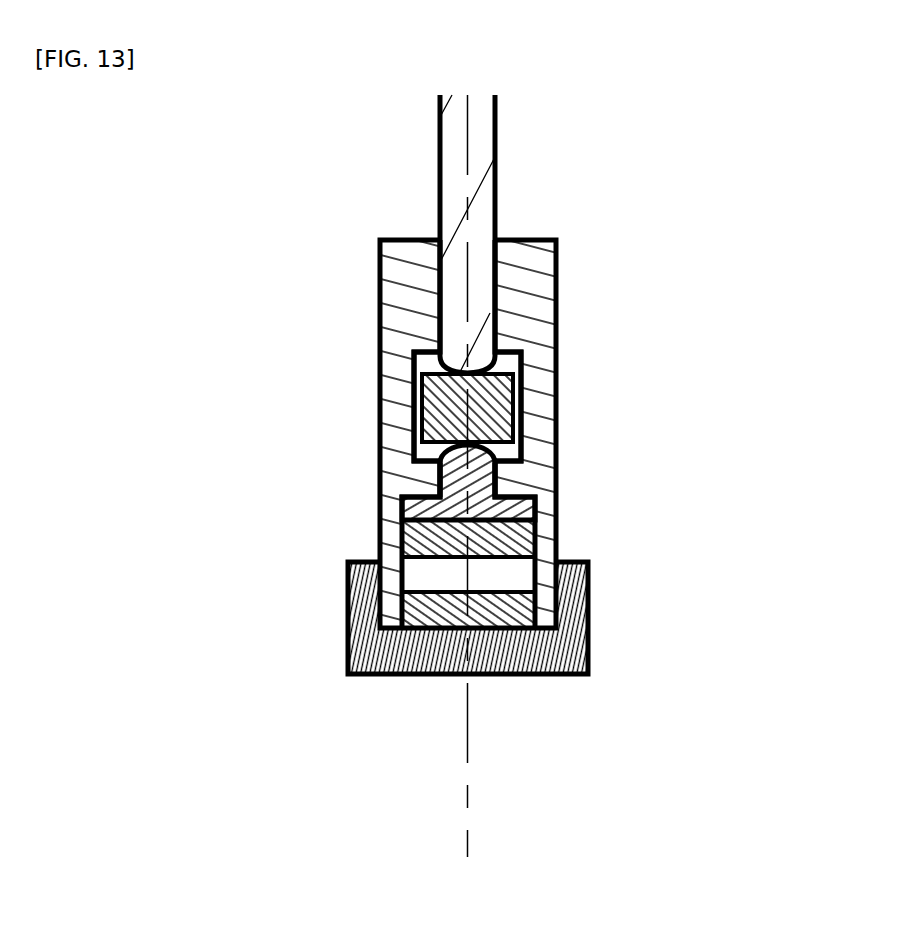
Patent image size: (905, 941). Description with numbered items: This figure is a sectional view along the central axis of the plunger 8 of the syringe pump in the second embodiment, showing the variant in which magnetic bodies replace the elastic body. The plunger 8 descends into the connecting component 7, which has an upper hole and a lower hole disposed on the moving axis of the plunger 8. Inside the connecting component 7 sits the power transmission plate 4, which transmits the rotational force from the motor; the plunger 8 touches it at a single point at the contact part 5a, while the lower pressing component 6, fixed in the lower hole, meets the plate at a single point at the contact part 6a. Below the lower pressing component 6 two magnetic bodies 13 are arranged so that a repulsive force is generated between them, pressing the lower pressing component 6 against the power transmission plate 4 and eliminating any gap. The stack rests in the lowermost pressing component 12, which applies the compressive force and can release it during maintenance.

The plunger 8 is at (440, 115).
The connecting component 7 is at (532, 287).
The contact part 5a is at (418, 380).
The power transmission plate 4 is at (540, 421).
The lower pressing component 6 is at (546, 542).
The contact part 6a is at (412, 418).
The magnetic body 13 is at (405, 550).
The lowermost pressing component 12 is at (565, 652).